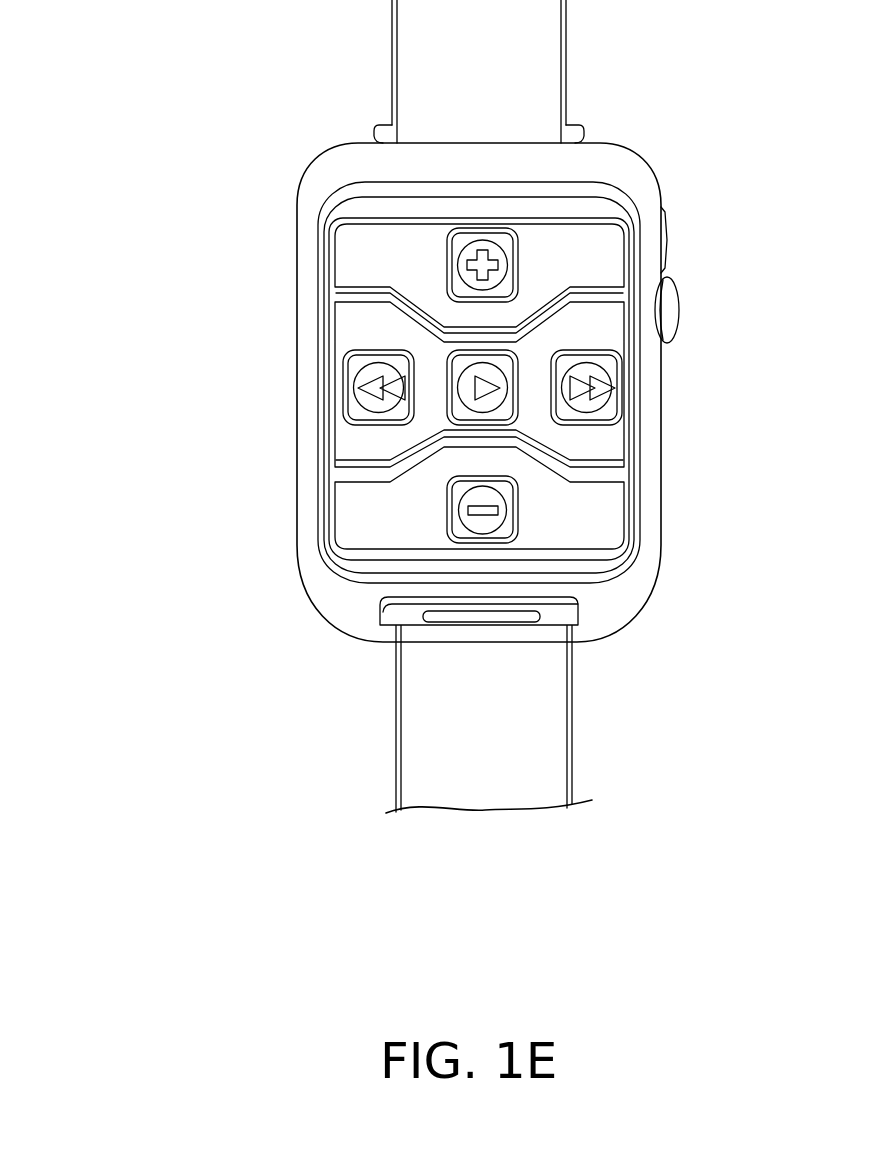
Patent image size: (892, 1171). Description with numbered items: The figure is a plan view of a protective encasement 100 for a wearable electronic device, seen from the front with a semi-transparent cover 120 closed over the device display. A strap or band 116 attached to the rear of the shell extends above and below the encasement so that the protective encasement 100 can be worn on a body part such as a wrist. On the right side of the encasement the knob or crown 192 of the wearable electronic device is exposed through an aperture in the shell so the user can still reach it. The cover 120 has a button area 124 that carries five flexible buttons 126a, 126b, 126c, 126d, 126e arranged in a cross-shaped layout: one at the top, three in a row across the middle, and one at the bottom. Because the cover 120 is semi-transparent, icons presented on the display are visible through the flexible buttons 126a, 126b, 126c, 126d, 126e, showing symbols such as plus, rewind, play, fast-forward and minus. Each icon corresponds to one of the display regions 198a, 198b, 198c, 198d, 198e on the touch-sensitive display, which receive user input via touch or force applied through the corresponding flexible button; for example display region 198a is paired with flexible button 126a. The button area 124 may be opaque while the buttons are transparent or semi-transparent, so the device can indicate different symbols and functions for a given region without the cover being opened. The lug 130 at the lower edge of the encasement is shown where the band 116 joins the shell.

The protective encasement 100 is at (203, 100).
The strap or band 116 is at (540, 687).
The cover 120 is at (307, 515).
The button area 124 is at (583, 233).
The flexible button 126a is at (362, 370).
The flexible button 126b is at (470, 388).
The flexible button 126c is at (613, 357).
The flexible button 126d is at (458, 266).
The flexible button 126e is at (518, 487).
The band attachment lug 130 is at (577, 620).
The knob or crown 192 is at (670, 290).
The display region 198a is at (358, 412).
The display region 198b is at (403, 362).
The display region 198c is at (597, 403).
The display region 198d is at (453, 234).
The display region 198e is at (495, 523).